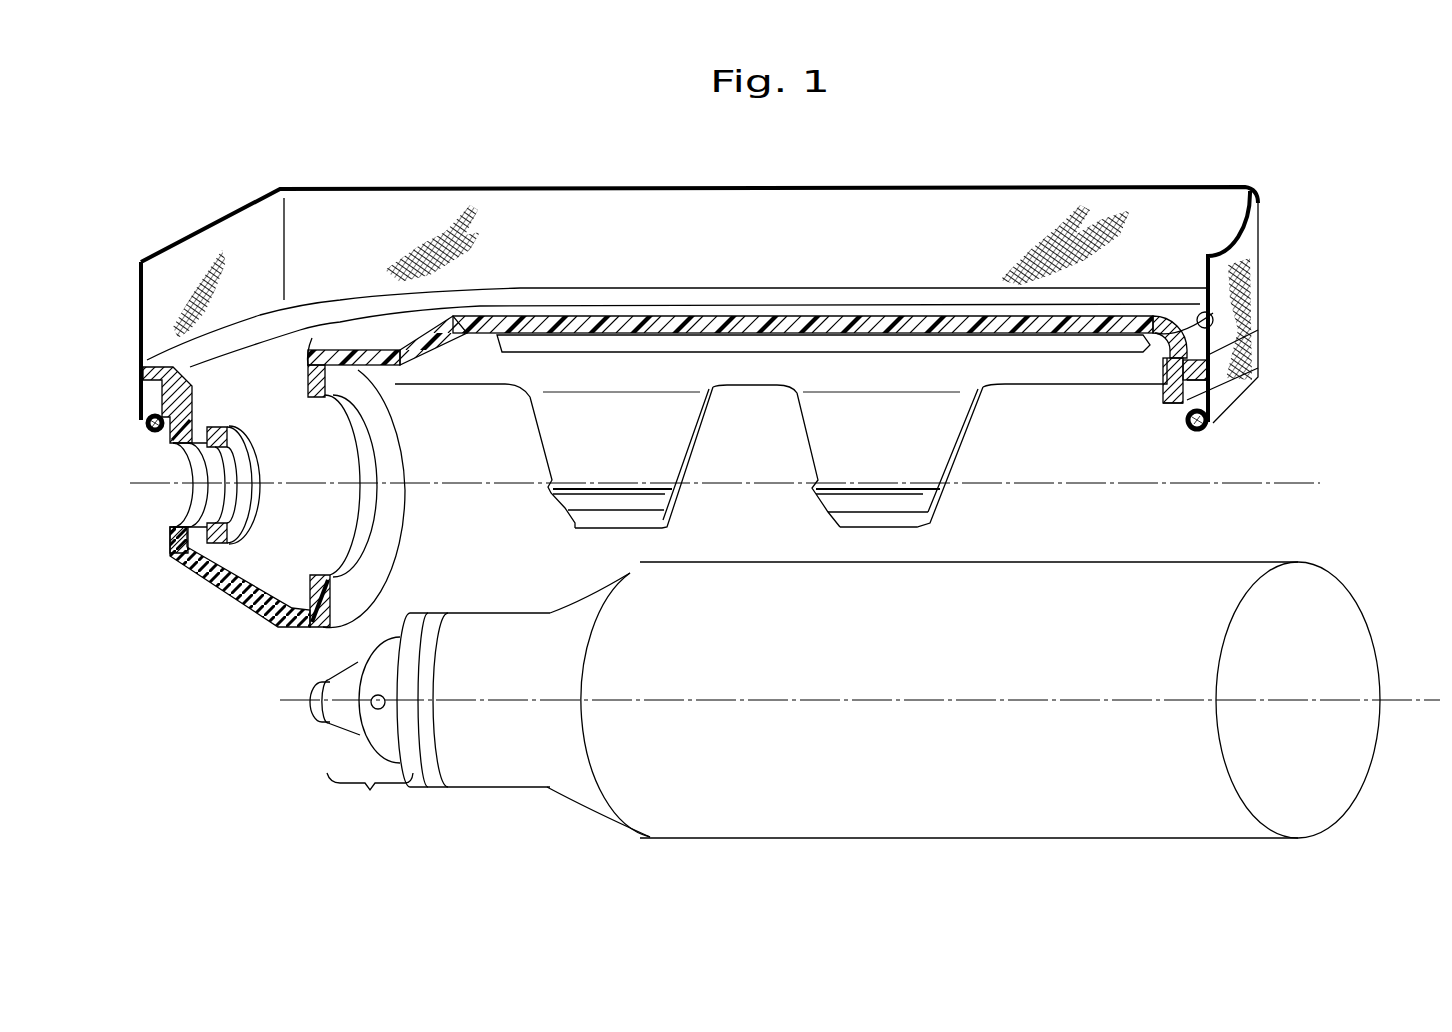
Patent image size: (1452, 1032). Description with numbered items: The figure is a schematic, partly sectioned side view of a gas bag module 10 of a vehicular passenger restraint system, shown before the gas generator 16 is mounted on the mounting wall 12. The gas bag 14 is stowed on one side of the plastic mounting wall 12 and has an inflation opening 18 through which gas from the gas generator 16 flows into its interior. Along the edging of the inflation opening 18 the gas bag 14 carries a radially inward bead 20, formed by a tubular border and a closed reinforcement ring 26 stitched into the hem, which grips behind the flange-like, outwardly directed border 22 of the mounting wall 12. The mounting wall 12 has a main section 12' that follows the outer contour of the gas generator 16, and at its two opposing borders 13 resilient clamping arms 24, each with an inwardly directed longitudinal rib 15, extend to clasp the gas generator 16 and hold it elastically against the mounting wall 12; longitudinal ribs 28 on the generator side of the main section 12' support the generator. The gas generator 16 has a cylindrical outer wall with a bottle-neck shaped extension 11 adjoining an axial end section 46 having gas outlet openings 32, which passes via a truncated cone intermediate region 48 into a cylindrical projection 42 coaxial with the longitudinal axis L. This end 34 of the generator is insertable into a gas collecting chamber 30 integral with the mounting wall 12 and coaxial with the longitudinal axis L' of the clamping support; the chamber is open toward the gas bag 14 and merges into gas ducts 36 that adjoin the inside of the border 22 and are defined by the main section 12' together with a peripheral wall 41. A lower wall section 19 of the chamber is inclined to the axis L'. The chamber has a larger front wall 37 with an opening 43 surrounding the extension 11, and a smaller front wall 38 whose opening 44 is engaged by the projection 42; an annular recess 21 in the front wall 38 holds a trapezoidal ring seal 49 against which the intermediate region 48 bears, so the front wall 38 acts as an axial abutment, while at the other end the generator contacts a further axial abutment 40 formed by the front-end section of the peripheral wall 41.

The gas bag module 10 is at (1350, 203).
The bottle-neck shaped extension 11 is at (490, 765).
The mounting wall 12 is at (747, 321).
The main section 12' is at (803, 285).
The opposing borders 13 is at (1028, 385).
The gas bag 14 is at (652, 215).
The longitudinal rib 15 is at (614, 493).
The gas generator 16 is at (1018, 845).
The inflation opening 18 is at (152, 345).
The lower wall section 19 is at (260, 618).
The bead 20 is at (146, 434).
The annular recess 21 is at (245, 462).
The border 22 is at (163, 374).
The resilient clamping arms 24 is at (578, 526).
The reinforcement ring 26 is at (148, 421).
The longitudinal ribs 28 is at (594, 345).
The gas collecting chamber 30 is at (213, 605).
The gas outlet openings 32 is at (386, 697).
The end 34 is at (370, 801).
The gas ducts 36 is at (968, 306).
The larger front wall 37 is at (385, 483).
The smaller front wall 38 is at (172, 535).
The axial abutment 40 is at (1170, 396).
The peripheral wall 41 is at (320, 340).
The cylindrical projection 42 is at (318, 710).
The opening 43 is at (362, 450).
The opening 44 is at (192, 496).
The end section 46 is at (388, 653).
The intermediate region 48 is at (340, 717).
The ring seal 49 is at (243, 500).
The longitudinal axis L is at (860, 670).
The longitudinal axis L' is at (735, 454).